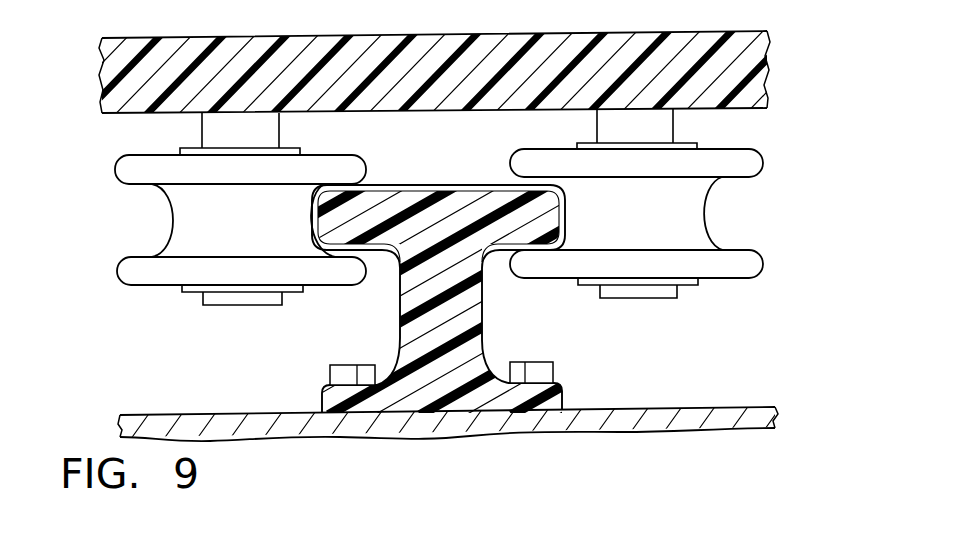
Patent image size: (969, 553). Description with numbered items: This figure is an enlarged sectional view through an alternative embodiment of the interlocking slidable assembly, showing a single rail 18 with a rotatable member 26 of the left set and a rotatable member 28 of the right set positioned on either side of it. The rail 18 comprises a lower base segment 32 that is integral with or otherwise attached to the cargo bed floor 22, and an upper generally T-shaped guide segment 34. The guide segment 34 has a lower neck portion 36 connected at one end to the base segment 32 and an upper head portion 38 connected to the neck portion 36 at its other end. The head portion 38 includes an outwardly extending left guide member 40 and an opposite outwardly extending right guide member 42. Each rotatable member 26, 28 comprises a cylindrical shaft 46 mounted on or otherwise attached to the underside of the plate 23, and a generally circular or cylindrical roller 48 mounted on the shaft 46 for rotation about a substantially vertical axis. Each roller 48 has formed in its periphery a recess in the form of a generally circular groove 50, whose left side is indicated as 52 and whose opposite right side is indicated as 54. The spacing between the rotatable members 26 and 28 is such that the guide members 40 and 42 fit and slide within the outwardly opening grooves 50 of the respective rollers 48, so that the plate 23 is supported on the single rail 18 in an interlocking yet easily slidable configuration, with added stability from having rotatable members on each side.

The left rail 18 is at (467, 412).
The cargo bed floor 22 is at (620, 407).
The plate 23 is at (550, 43).
The left set of rotatable members 26 is at (188, 338).
The right set of rotatable members 28 is at (700, 328).
The lower base segment 32 is at (412, 393).
The T-shaped guide segment 34 is at (484, 303).
The neck portion 36 is at (400, 313).
The head portion 38 is at (433, 223).
The left guide member 40 is at (353, 237).
The right guide member 42 is at (523, 221).
The cylindrical shaft 46 is at (262, 133).
The roller 48 is at (170, 275).
The groove 50 is at (187, 209).
The left side of groove 52 is at (137, 233).
The right side of groove 54 is at (753, 228).